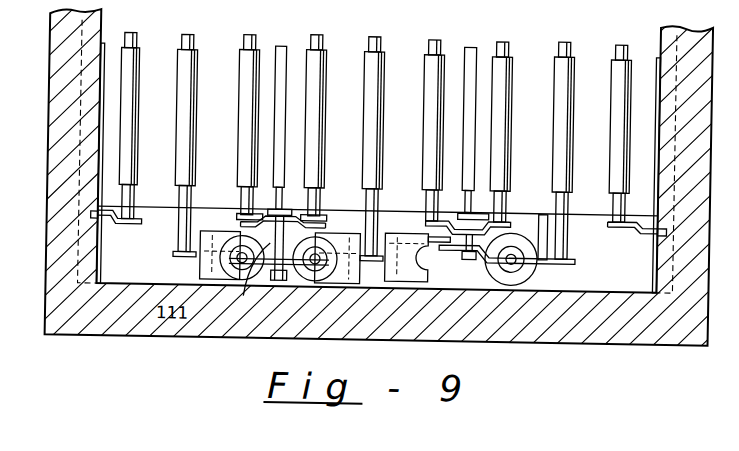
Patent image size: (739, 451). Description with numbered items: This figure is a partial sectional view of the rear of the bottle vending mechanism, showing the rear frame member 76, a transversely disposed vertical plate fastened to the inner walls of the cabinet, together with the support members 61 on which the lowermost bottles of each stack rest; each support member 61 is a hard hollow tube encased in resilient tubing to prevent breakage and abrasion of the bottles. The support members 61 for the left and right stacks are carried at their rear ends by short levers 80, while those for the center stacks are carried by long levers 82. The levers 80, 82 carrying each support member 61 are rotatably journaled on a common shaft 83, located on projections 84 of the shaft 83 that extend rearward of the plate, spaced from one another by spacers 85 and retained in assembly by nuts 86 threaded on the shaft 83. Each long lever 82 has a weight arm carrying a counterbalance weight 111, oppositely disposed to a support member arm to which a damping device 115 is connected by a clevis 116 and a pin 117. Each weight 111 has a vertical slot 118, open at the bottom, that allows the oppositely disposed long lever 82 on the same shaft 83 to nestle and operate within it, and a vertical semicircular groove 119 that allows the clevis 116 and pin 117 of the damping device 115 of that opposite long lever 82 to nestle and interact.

The support member 61 is at (237, 52).
The shaft 83 is at (100, 48).
The short lever 80 is at (123, 228).
The long lever 82 is at (194, 263).
The vertical semicircular groove 119 is at (238, 247).
The counterbalance weight 111 is at (324, 238).
The spacer 85 is at (245, 277).
The nut 86 is at (280, 283).
The projection 84 is at (297, 281).
The vertical slot 118 is at (346, 284).
The rear frame member 76 is at (400, 232).
The pin 117 is at (514, 247).
The damping device 115 is at (487, 260).
The clevis 116 is at (517, 280).